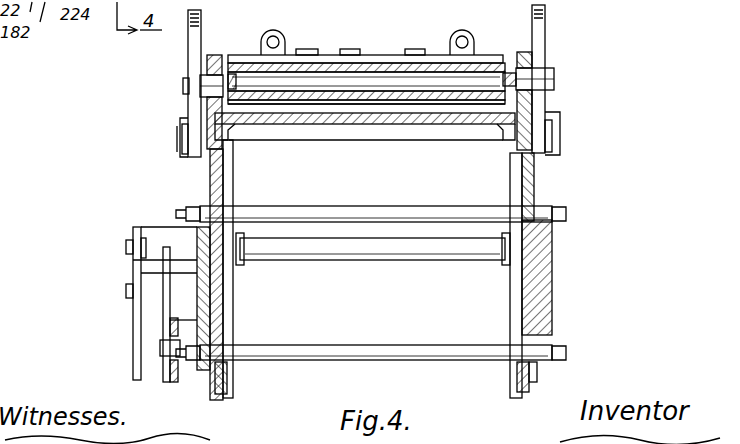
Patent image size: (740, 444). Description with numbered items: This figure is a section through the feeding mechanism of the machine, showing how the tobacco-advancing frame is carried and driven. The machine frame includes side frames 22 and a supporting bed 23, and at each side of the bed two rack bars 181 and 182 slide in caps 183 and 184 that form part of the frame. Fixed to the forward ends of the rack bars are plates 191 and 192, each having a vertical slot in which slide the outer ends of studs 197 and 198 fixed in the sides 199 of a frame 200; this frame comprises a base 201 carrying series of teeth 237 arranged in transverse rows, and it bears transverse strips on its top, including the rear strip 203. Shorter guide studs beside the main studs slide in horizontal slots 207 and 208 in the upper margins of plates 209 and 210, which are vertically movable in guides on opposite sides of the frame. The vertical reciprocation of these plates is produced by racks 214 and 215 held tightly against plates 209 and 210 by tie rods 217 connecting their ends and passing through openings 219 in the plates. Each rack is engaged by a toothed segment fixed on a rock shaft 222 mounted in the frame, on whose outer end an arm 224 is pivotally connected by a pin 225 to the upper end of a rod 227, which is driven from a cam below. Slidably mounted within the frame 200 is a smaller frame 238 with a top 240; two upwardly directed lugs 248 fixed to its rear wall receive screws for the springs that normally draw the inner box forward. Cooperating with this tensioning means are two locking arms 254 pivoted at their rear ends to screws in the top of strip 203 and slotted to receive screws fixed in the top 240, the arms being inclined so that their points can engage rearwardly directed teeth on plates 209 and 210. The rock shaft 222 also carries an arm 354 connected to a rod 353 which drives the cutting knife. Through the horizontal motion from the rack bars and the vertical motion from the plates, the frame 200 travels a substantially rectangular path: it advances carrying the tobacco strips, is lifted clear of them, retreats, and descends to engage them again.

The side frames 22 is at (233, 381).
The bed 23 is at (403, 126).
The rack bar 181 is at (556, 130).
The rack bar 182 is at (188, 135).
The cap 183 is at (560, 133).
The cap 184 is at (182, 138).
The plate 191 is at (201, 27).
The plate 192 is at (545, 28).
The stud 197 is at (188, 85).
The stud 198 is at (556, 78).
The sides of frame 199 is at (236, 83).
The frame 200 is at (300, 104).
The base 201 is at (480, 100).
The rear strip 203 is at (380, 58).
The horizontal slot 207 is at (214, 57).
The horizontal slot 208 is at (455, 58).
The plate 209 is at (210, 178).
The plate 210 is at (540, 178).
The rack 214 is at (213, 308).
The rack 215 is at (548, 308).
The tie rods 217 is at (405, 213).
The openings 219 is at (222, 207).
The rock shaft 222 is at (378, 255).
The arm 224 is at (133, 268).
The pin 225 is at (126, 296).
The rod 227 is at (135, 338).
The teeth 237 is at (368, 104).
The smaller frame 238 is at (360, 97).
The top 240 is at (338, 62).
The lugs 248 is at (268, 35).
The arms 254 is at (283, 55).
The rod 353 is at (176, 352).
The arm 354 is at (165, 313).